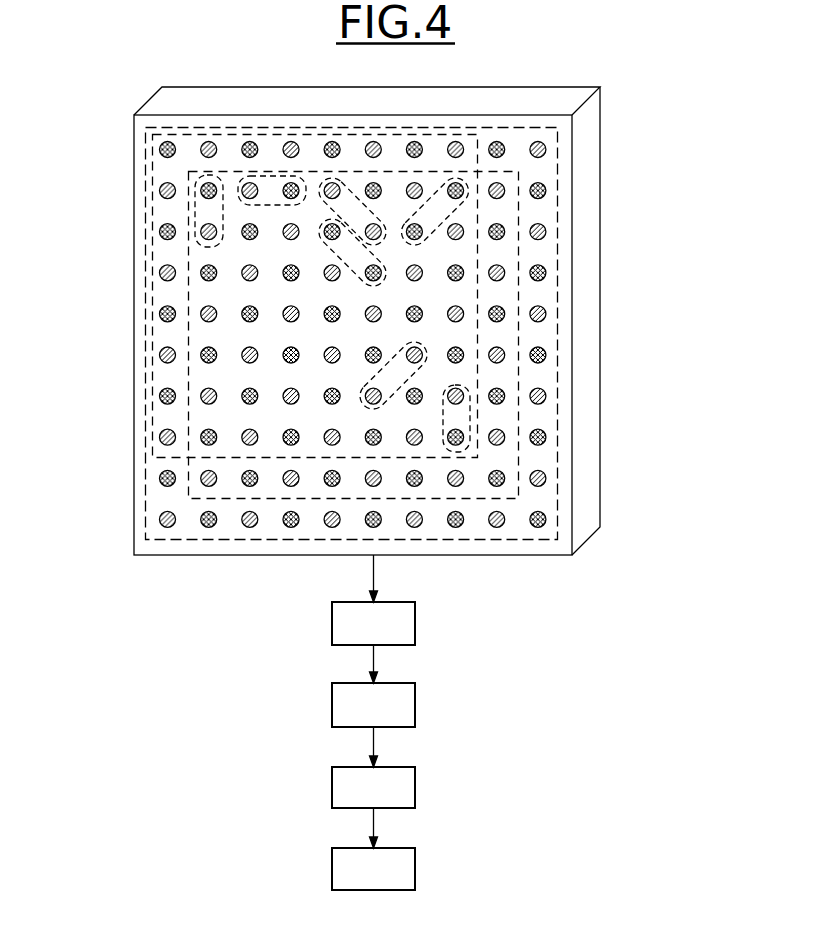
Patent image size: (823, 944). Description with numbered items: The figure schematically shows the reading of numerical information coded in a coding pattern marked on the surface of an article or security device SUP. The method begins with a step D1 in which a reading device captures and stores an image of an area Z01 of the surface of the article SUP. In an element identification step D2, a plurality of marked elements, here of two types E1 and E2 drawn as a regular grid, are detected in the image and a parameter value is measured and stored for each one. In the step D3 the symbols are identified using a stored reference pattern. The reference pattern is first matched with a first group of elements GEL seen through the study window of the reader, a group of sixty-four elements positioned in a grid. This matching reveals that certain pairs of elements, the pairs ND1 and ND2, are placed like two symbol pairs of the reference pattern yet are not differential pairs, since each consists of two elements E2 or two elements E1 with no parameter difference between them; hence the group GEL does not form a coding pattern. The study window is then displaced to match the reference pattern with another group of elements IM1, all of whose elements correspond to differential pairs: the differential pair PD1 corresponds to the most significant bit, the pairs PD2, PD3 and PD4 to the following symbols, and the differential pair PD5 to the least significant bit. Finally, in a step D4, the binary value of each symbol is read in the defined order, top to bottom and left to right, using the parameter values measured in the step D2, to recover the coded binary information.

The article or security device SUP is at (176, 104).
The first group of elements GEL is at (155, 378).
The area of the surface Z01 is at (150, 296).
The group of elements IM1 is at (518, 335).
The element of first type E1 is at (161, 149).
The element of second type E2 is at (161, 191).
The differential pair PD1 is at (195, 209).
The differential pair PD2 is at (265, 175).
The differential pair PD3 is at (350, 258).
The differential pair PD4 is at (420, 370).
The differential pair PD5 is at (472, 417).
The non-differential pair ND1 is at (360, 203).
The non-differential pair ND2 is at (430, 207).
The image capture step D1 is at (373, 623).
The element identification step D2 is at (373, 705).
The symbol identification step D3 is at (373, 787).
The information reading step D4 is at (373, 869).